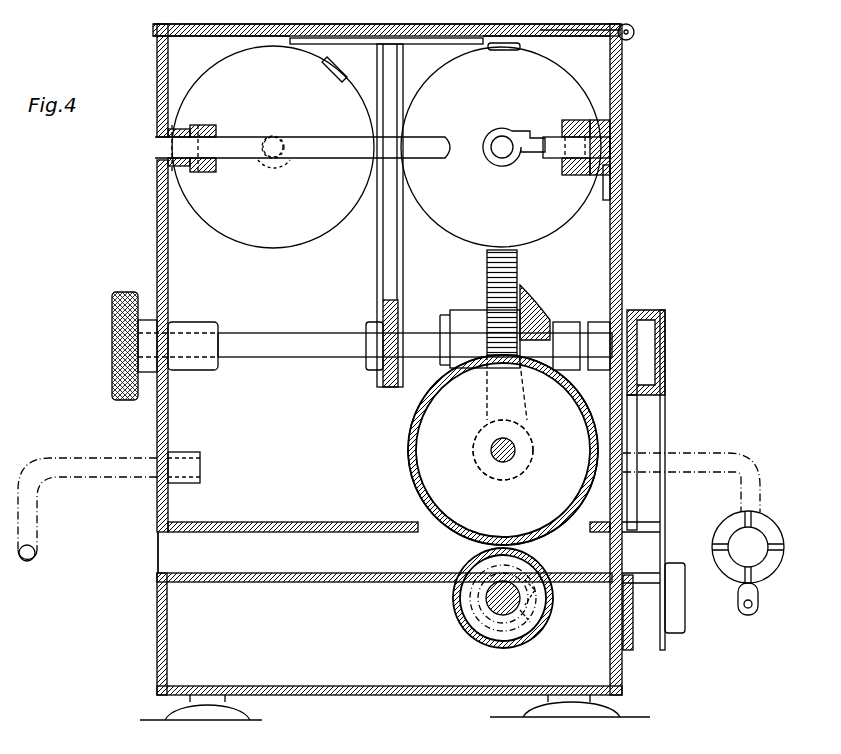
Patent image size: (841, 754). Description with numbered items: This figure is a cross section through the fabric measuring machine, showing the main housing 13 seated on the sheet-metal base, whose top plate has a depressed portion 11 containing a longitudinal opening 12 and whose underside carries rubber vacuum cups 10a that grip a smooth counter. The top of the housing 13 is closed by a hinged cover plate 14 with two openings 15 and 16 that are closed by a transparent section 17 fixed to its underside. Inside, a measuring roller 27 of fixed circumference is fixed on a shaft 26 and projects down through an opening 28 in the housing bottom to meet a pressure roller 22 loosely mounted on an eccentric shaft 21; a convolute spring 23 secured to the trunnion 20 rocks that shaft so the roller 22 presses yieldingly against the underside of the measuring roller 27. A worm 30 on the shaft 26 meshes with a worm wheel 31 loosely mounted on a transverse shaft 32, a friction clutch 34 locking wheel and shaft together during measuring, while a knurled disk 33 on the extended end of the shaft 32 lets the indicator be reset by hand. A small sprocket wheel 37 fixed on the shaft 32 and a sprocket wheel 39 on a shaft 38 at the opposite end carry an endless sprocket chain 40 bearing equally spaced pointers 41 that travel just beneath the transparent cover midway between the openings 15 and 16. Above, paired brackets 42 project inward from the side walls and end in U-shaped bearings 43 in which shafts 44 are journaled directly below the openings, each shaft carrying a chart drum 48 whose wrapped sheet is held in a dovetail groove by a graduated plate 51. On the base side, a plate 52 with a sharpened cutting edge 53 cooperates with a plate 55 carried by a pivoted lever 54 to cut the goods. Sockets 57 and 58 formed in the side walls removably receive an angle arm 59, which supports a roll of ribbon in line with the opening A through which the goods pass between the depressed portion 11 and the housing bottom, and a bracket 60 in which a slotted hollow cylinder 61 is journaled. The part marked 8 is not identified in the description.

The pawl 8 is at (520, 622).
The vacuum cups 10a is at (667, 692).
The depressed portion of top plate 11 is at (331, 596).
The longitudinally disposed opening 12 is at (467, 583).
The main housing 13 is at (622, 245).
The top plate 14 is at (200, 21).
The opening 15 is at (268, 30).
The opening 16 is at (494, 30).
The section of transparent material 17 is at (566, 36).
The trunnion 20 is at (517, 602).
The shaft 21 is at (523, 608).
The pressure roller 22 is at (493, 607).
The convolute spring 23 is at (540, 608).
The shaft 26 is at (515, 448).
The measuring roller 27 is at (420, 417).
The opening 28 is at (437, 535).
The worm 30 is at (483, 457).
The worm wheel 31 is at (487, 280).
The transversely disposed shaft 32 is at (312, 333).
The disk 33 is at (125, 292).
The friction clutch 34 is at (530, 308).
The small sprocket wheel 37 is at (380, 358).
The shaft 38 is at (262, 143).
The sprocket wheel 39 is at (385, 233).
The endless flexible member 40 is at (384, 388).
The pointers 41 is at (426, 46).
The arms or brackets 42 is at (533, 138).
The U-shaped bearings 43 is at (270, 173).
The shafts 44 is at (281, 143).
The drum 48 is at (386, 147).
The plate 51 is at (335, 68).
The plate 52 is at (627, 610).
The cutting edge 53 is at (632, 568).
The lever 54 is at (660, 432).
The plate 55 is at (633, 350).
The socket 57 is at (185, 462).
The socket 58 is at (622, 438).
The angle bracket 59 is at (63, 458).
The bracket 60 is at (730, 455).
The hollow cylinder 61 is at (770, 570).
The opening A is at (195, 555).